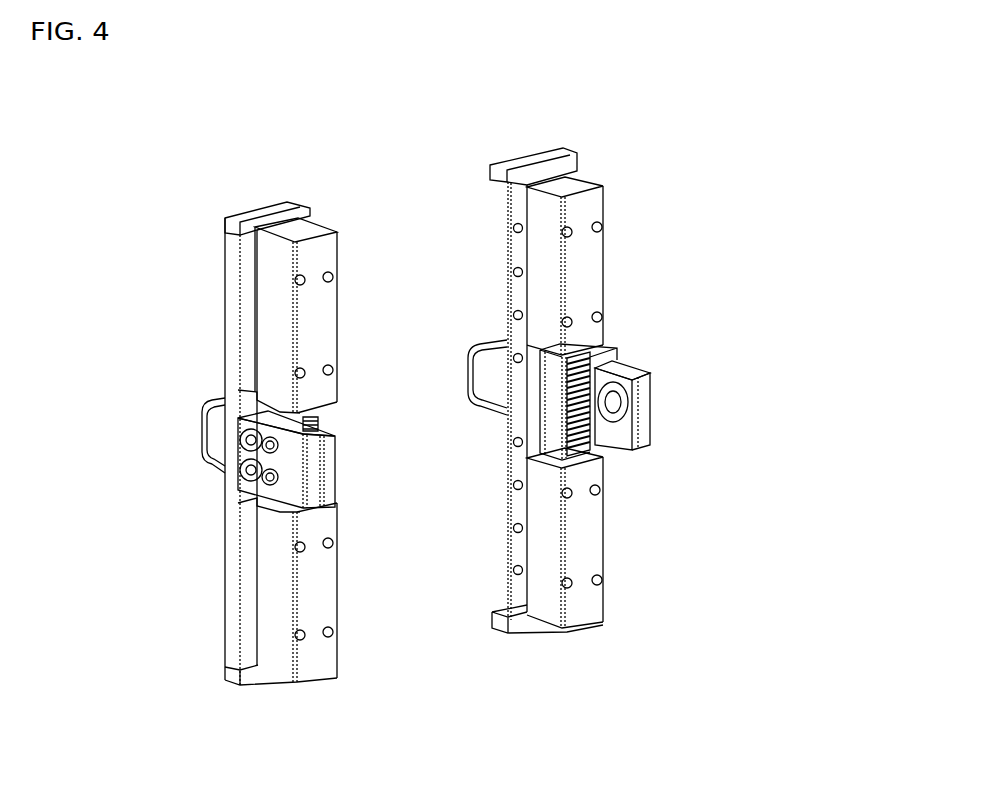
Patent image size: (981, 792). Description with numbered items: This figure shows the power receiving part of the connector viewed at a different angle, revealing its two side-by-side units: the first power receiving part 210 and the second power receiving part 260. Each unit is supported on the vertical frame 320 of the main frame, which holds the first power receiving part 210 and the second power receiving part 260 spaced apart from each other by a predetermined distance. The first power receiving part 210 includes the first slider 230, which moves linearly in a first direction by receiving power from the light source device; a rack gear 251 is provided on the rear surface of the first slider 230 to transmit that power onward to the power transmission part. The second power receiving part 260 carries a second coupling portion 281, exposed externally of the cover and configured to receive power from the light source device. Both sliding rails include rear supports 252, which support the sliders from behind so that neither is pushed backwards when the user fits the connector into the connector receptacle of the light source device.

The first power receiving part 210 is at (660, 250).
The first slider 230 is at (590, 418).
The rack gear 251 is at (615, 460).
The rear supports 252 is at (320, 257).
The second power receiving part 260 is at (175, 537).
The second coupling portion 281 is at (215, 440).
The vertical frame 320 is at (335, 500).